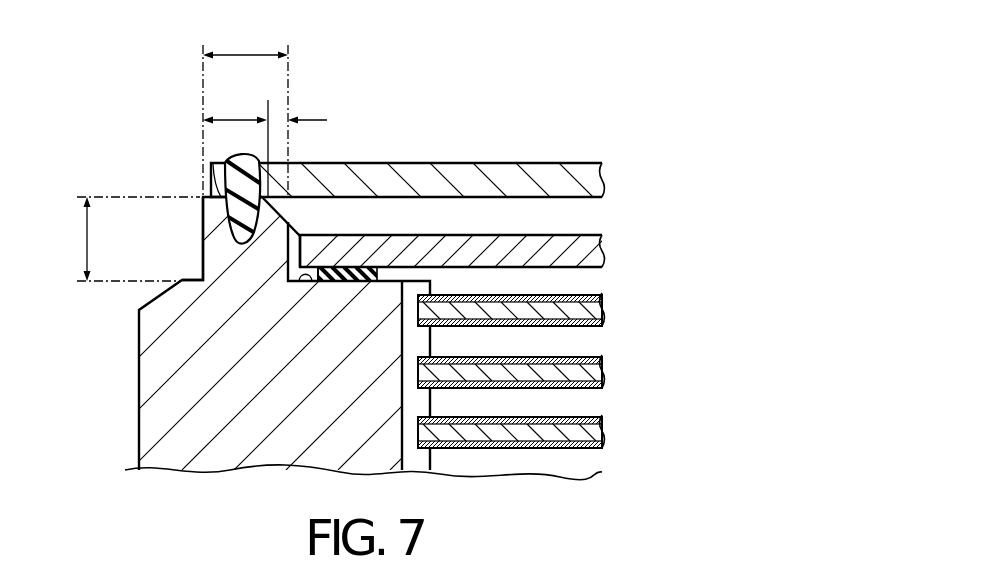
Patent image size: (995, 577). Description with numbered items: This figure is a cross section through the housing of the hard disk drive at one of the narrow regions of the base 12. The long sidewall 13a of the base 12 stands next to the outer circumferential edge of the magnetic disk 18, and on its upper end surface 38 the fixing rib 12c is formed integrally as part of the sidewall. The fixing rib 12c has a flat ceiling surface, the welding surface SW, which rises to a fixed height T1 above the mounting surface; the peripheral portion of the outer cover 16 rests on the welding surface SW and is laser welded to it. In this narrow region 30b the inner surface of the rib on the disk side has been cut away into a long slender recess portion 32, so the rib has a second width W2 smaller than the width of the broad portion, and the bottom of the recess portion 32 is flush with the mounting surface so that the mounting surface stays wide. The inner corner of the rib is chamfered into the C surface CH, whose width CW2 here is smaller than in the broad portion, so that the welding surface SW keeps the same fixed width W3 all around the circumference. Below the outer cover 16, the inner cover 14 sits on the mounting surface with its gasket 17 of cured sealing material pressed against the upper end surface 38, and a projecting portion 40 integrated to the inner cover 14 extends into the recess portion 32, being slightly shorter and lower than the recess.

The base 12 is at (128, 444).
The fixing rib 12c is at (220, 257).
The long sidewall 13a is at (163, 375).
The inner cover 14 is at (604, 255).
The outer cover 16 is at (604, 181).
The gasket 17 is at (366, 282).
The magnetic disk 18 is at (604, 313).
The narrow region 30b is at (172, 188).
The recess portion 32 is at (312, 252).
The upper end surface 38 is at (318, 272).
The projecting portion 40 is at (296, 277).
The welding surface SW is at (218, 190).
The C surface CH is at (280, 200).
The second width W2 is at (244, 53).
The width of welding surface W3 is at (238, 118).
The width of C surface in second region CW2 is at (280, 118).
The height of fixing rib T1 is at (85, 238).